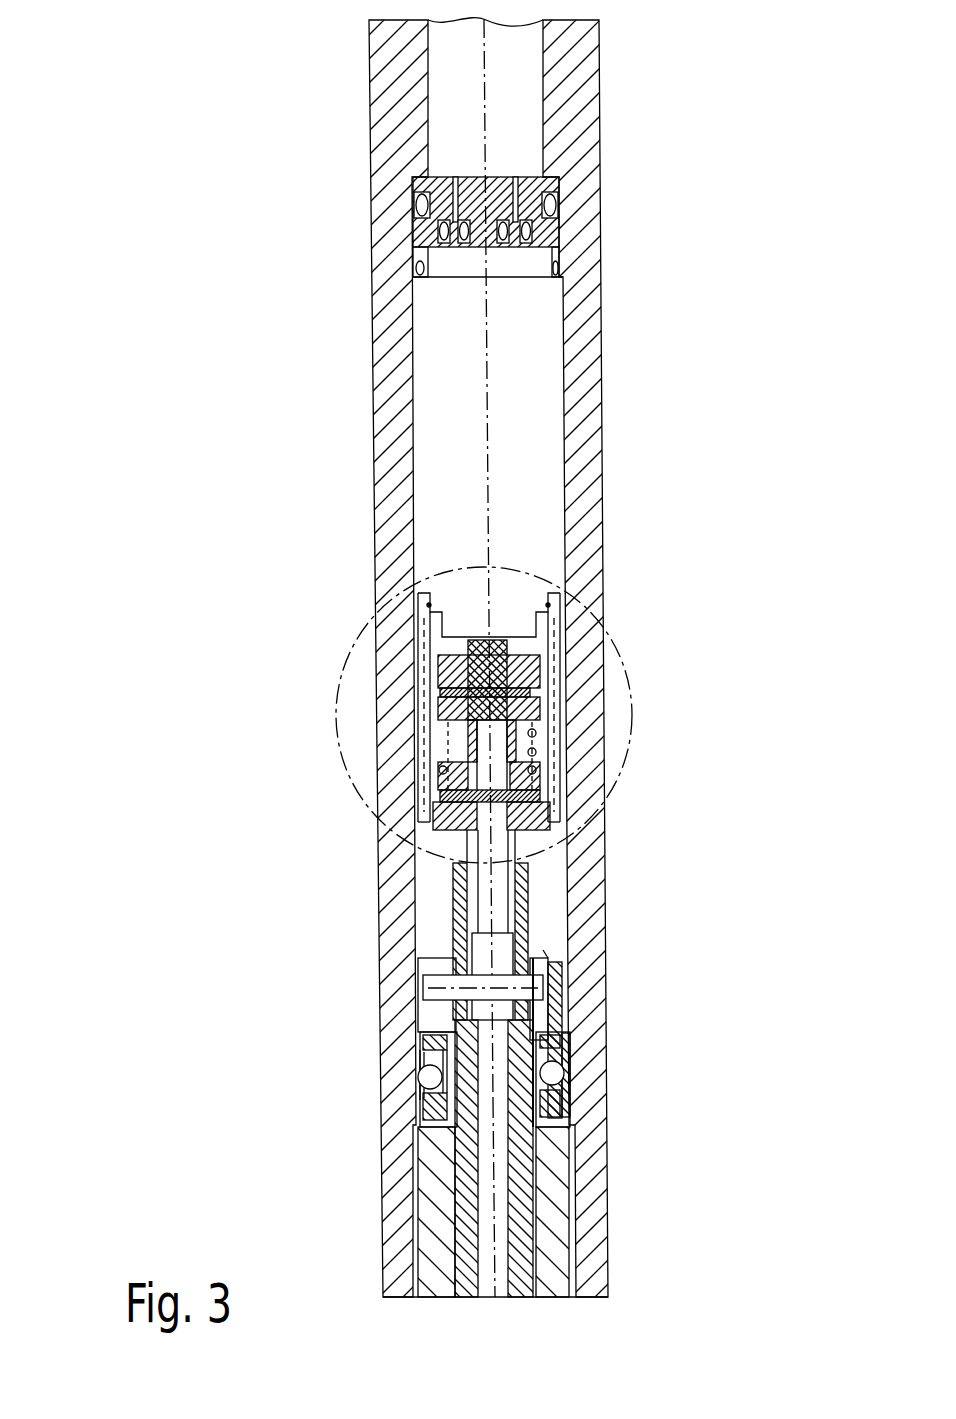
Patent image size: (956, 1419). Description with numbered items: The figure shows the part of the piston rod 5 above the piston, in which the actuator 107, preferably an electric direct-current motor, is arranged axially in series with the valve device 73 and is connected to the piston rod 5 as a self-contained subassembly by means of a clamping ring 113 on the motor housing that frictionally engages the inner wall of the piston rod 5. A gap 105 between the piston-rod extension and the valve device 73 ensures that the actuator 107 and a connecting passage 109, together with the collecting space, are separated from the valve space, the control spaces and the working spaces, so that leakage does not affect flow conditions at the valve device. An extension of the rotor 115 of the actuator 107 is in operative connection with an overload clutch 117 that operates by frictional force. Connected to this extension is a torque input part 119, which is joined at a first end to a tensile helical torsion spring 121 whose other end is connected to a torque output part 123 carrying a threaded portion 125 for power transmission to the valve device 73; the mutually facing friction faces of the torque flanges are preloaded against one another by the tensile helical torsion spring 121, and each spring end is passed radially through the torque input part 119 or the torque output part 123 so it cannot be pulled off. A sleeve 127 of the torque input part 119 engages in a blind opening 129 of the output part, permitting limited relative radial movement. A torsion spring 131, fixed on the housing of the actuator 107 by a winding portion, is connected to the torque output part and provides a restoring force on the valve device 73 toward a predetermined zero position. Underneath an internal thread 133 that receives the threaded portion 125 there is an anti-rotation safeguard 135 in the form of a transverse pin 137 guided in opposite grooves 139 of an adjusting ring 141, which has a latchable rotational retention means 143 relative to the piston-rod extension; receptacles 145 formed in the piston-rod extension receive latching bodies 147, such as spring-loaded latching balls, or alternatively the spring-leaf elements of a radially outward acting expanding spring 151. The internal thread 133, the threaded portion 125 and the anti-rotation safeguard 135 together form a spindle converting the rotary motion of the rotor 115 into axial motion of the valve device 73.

The piston rod 5 is at (378, 400).
The valve device 73 is at (523, 1198).
The gap 105 is at (447, 1162).
The actuator 107 is at (532, 402).
The connecting passage 109 is at (488, 1225).
The clamping ring 113 is at (413, 268).
The rotor 115 is at (548, 620).
The overload clutch 117 is at (627, 675).
The torque input part 119 is at (440, 668).
The tensile helical torsion spring 121 is at (443, 747).
The torque output part 123 is at (452, 805).
The threaded portion 125 is at (470, 858).
The sleeve 127 is at (536, 752).
The blind opening 129 is at (533, 768).
The torsion spring 131 is at (425, 642).
The internal thread 133 is at (453, 935).
The anti-rotation safeguard 135 is at (543, 950).
The transverse pin 137 is at (555, 958).
The grooves 139 is at (423, 988).
The adjusting ring 141 is at (562, 1012).
The rotational retention means 143 is at (577, 1052).
The receptacles 145 is at (418, 1086).
The latching bodies 147 is at (421, 1070).
The expanding spring 151 is at (430, 1035).